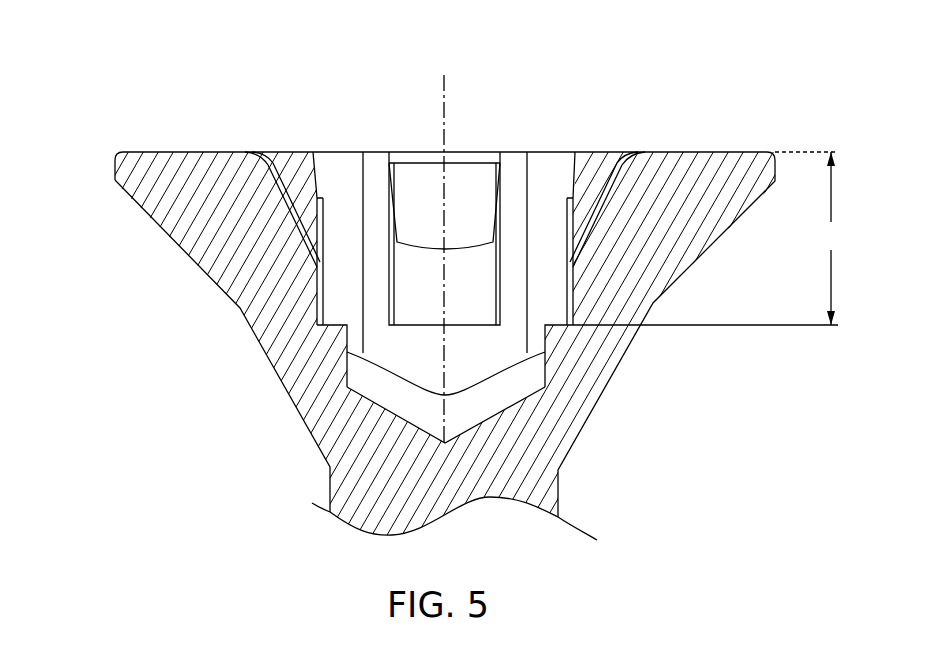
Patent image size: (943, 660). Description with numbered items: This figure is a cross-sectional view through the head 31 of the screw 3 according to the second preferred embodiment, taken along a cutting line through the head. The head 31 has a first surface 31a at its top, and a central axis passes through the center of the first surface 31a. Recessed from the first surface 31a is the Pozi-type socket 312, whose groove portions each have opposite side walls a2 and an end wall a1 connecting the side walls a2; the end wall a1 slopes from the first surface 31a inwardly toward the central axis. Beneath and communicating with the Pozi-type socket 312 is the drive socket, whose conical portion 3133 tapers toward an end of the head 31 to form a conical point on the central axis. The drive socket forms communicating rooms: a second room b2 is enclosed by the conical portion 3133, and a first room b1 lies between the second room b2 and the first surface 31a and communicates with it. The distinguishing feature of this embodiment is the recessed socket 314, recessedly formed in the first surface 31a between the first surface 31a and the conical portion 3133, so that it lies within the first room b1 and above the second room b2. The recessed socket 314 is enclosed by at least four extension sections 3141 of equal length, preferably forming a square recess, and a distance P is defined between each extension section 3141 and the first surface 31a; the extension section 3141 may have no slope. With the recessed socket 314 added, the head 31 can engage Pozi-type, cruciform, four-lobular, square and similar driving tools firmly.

The screw 3 is at (683, 130).
The head 31 is at (113, 172).
The first surface 31a is at (192, 150).
The Pozi-type socket 312 is at (460, 148).
The recessed socket 314 is at (317, 313).
The conical portion 3133 is at (371, 392).
The extension section 3141 is at (573, 326).
The end wall a1 is at (423, 190).
The side wall a2 is at (502, 198).
The first room b1 is at (510, 307).
The second room b2 is at (497, 398).
The distance P is at (830, 238).